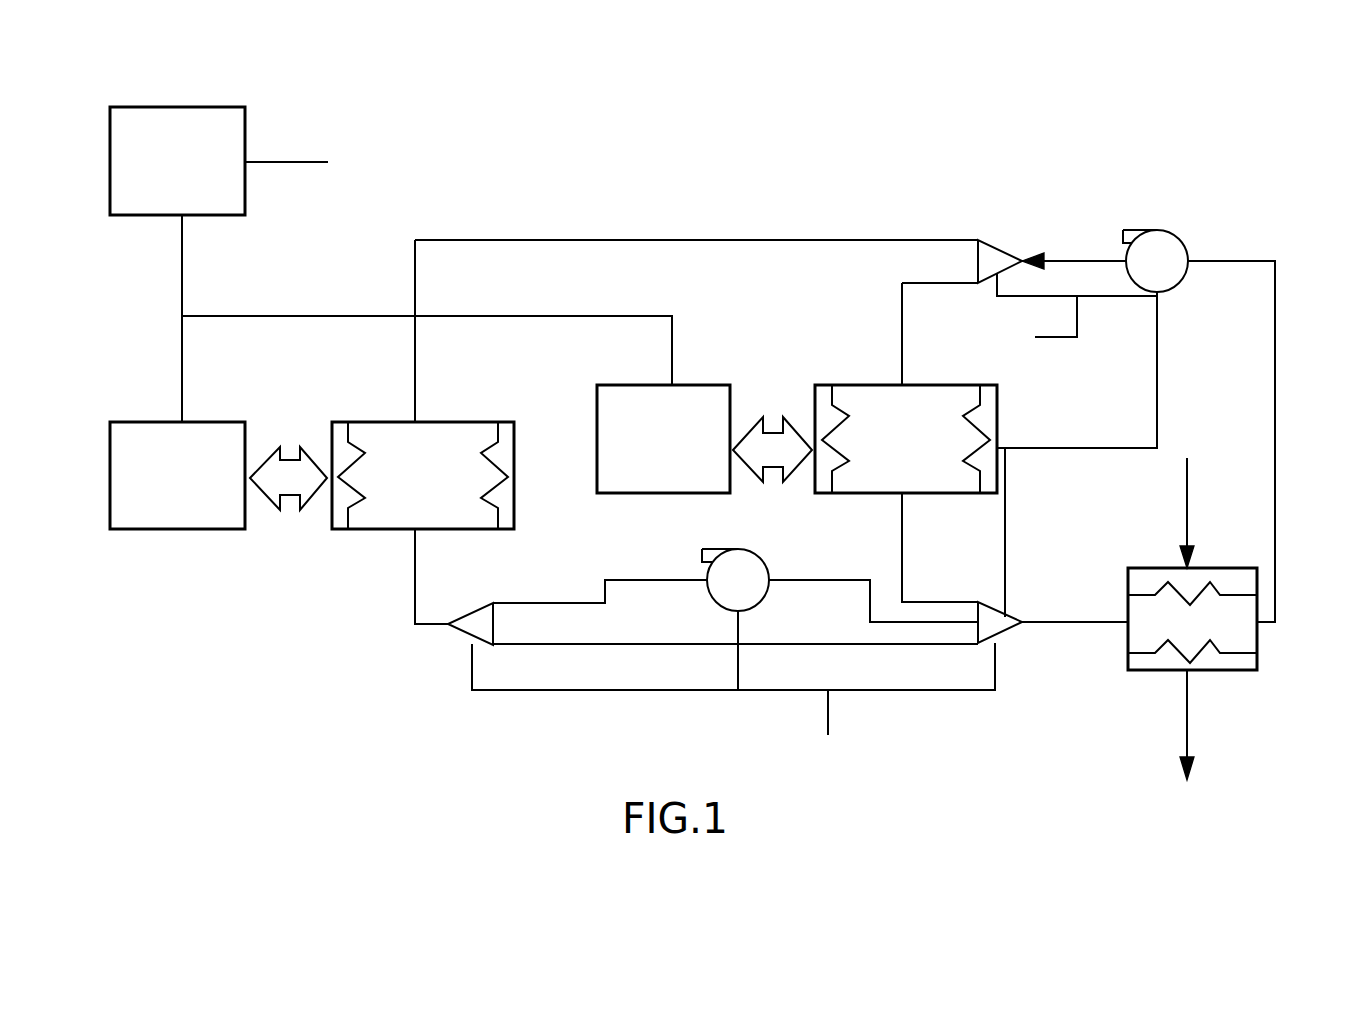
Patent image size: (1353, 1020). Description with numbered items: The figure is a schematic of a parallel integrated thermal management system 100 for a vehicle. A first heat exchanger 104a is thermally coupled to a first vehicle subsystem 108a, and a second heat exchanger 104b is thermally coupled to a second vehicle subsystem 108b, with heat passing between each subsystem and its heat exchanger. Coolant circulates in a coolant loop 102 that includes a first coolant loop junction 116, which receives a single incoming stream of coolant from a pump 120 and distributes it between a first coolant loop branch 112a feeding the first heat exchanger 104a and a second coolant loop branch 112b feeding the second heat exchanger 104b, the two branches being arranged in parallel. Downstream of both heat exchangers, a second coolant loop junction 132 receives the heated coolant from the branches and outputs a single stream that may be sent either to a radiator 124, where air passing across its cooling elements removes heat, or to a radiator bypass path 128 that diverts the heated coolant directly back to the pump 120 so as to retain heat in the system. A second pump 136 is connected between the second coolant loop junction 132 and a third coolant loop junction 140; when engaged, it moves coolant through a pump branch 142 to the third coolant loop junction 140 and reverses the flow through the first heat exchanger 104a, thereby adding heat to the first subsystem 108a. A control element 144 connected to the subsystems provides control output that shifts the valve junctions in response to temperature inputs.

The parallel integrated thermal management system 100 is at (1110, 155).
The coolant loop 102 is at (1287, 575).
The first heat exchanger 104a is at (477, 422).
The second heat exchanger 104b is at (997, 400).
The first vehicle subsystem 108a is at (127, 422).
The second vehicle subsystem 108b is at (597, 400).
The first coolant loop branch 112a is at (415, 575).
The second coolant loop branch 112b is at (902, 338).
The first coolant loop junction 116 is at (985, 244).
The pump 120 is at (1179, 239).
The radiator 124 is at (1128, 605).
The radiator bypass path 128 is at (1137, 448).
The second coolant loop junction 132 is at (1003, 633).
The second pump 136 is at (755, 553).
The third coolant loop junction 140 is at (464, 632).
The pump branch 142 is at (633, 580).
The control element 144 is at (240, 200).